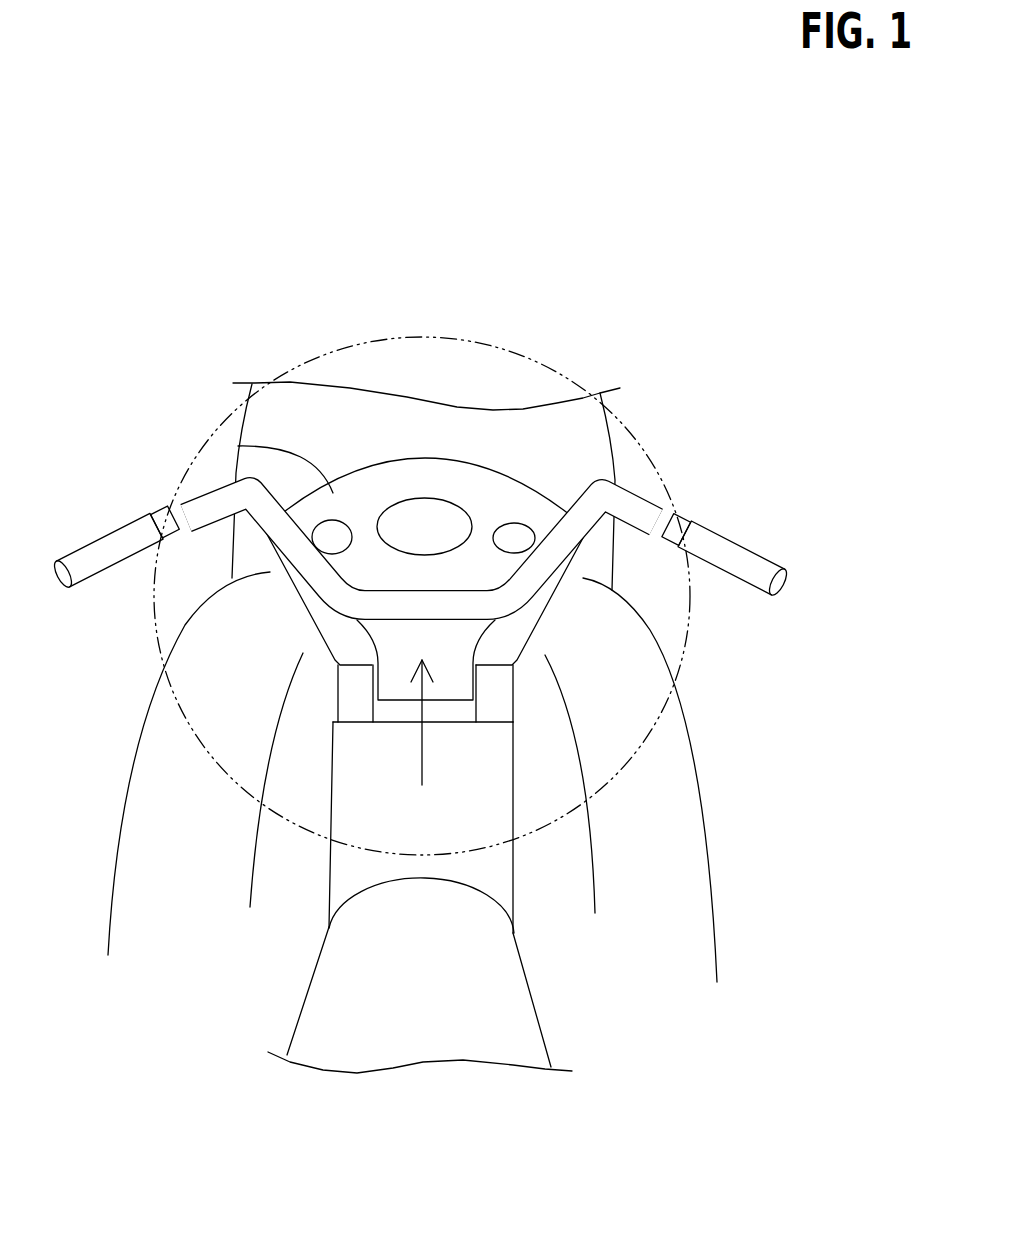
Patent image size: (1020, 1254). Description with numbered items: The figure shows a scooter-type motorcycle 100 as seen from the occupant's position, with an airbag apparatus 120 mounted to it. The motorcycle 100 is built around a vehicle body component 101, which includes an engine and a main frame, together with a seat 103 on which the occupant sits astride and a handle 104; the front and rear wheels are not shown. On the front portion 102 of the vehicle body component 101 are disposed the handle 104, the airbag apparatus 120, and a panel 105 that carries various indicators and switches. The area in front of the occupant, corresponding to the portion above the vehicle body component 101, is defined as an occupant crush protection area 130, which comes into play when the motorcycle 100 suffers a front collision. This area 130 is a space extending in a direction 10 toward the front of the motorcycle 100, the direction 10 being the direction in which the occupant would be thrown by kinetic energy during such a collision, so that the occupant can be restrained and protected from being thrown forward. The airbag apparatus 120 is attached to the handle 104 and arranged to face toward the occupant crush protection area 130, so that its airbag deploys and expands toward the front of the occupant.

The direction 10 is at (423, 767).
The motorcycle 100 is at (666, 408).
The vehicle body component 101 is at (630, 923).
The front portion 102 is at (615, 668).
The seat 103 is at (533, 1038).
The handle 104 is at (165, 508).
The panel 105 is at (247, 457).
The airbag apparatus 120 is at (350, 643).
The occupant crush protection area 130 is at (303, 351).